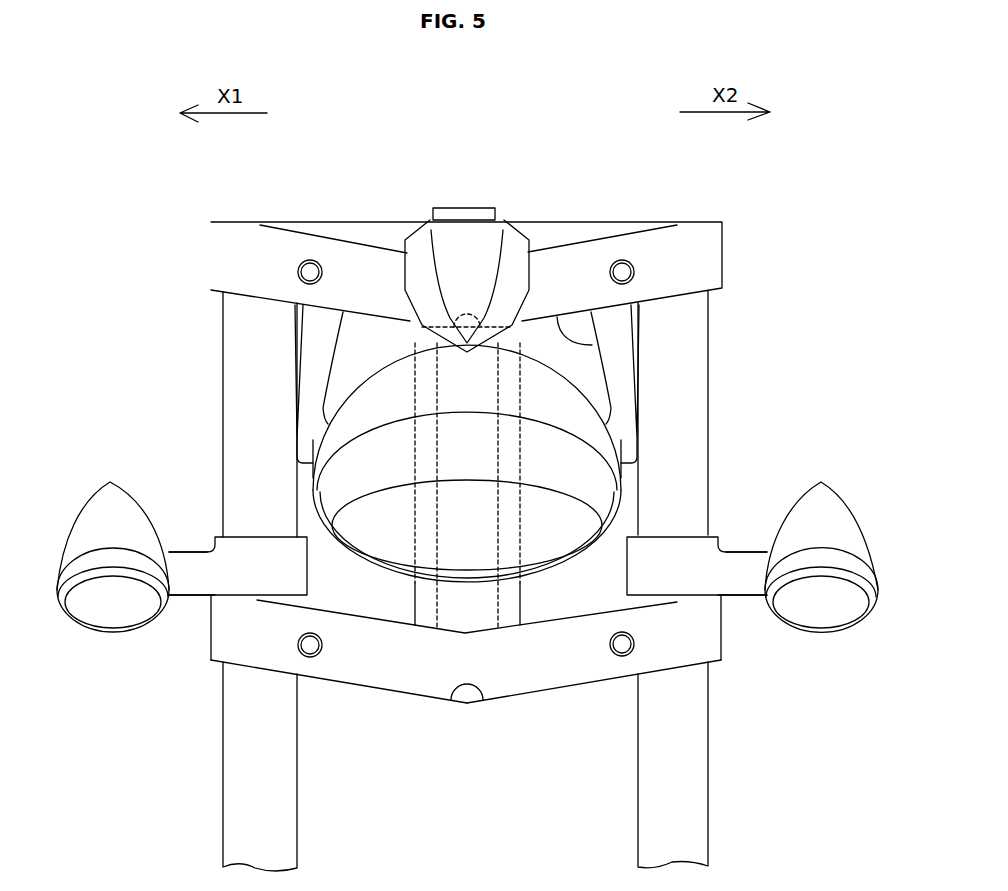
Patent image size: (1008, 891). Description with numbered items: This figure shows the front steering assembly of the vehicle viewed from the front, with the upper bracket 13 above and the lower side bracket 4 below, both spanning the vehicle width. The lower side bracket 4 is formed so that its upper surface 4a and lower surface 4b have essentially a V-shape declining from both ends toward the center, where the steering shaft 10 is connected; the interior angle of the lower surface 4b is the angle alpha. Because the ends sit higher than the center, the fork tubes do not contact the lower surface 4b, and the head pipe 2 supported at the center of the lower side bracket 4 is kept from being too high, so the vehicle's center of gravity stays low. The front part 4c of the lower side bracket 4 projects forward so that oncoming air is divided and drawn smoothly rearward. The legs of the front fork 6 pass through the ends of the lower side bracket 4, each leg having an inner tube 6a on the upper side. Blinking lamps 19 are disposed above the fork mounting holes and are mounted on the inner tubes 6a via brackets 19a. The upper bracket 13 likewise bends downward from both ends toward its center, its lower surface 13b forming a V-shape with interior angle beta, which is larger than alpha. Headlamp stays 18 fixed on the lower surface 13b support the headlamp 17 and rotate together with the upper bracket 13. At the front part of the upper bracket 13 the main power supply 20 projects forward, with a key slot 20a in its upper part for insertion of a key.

The head pipe 2 is at (423, 602).
The lower side bracket 4 is at (697, 637).
The upper surface 4a is at (580, 615).
The lower surface 4b is at (537, 692).
The front part 4c is at (385, 677).
The front fork 6 is at (257, 813).
The inner tube 6a is at (258, 709).
The steering shaft 10 is at (503, 603).
The upper bracket 13 is at (705, 256).
The lower surface 13b is at (592, 345).
The headlamp 17 is at (560, 522).
The headlamp stays 18 is at (320, 337).
The blinking lamps 19 is at (108, 513).
The brackets 19a is at (198, 565).
The main power supply 20 is at (495, 303).
The key slot 20a is at (462, 207).